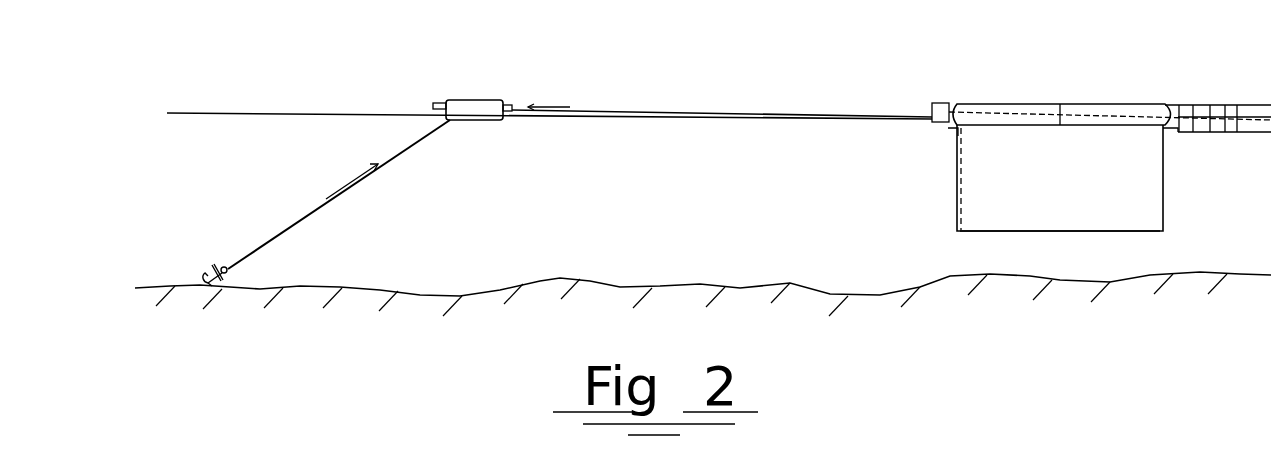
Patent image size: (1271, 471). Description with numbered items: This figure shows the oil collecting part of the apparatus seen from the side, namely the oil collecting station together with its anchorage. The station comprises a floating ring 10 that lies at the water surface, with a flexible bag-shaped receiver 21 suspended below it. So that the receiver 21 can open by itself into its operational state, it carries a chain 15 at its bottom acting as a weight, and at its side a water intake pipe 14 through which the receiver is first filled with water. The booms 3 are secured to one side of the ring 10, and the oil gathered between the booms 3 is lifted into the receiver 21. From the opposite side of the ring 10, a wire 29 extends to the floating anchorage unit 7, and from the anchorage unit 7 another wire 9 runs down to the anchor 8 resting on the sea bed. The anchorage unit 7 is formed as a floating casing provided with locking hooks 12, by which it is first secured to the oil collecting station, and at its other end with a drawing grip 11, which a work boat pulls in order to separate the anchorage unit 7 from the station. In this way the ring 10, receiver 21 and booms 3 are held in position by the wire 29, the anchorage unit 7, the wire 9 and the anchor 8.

The boom 3 is at (1201, 106).
The anchorage unit 7 is at (480, 100).
The anchor 8 is at (219, 268).
The wire 9 is at (288, 230).
The floating ring 10 is at (1035, 106).
The drawing grip 11 is at (434, 104).
The locking hooks 12 is at (512, 106).
The water intake pipe 14 is at (956, 162).
The chain 15 is at (1022, 233).
The bag-shaped receiver 21 is at (993, 205).
The wire 29 is at (628, 116).